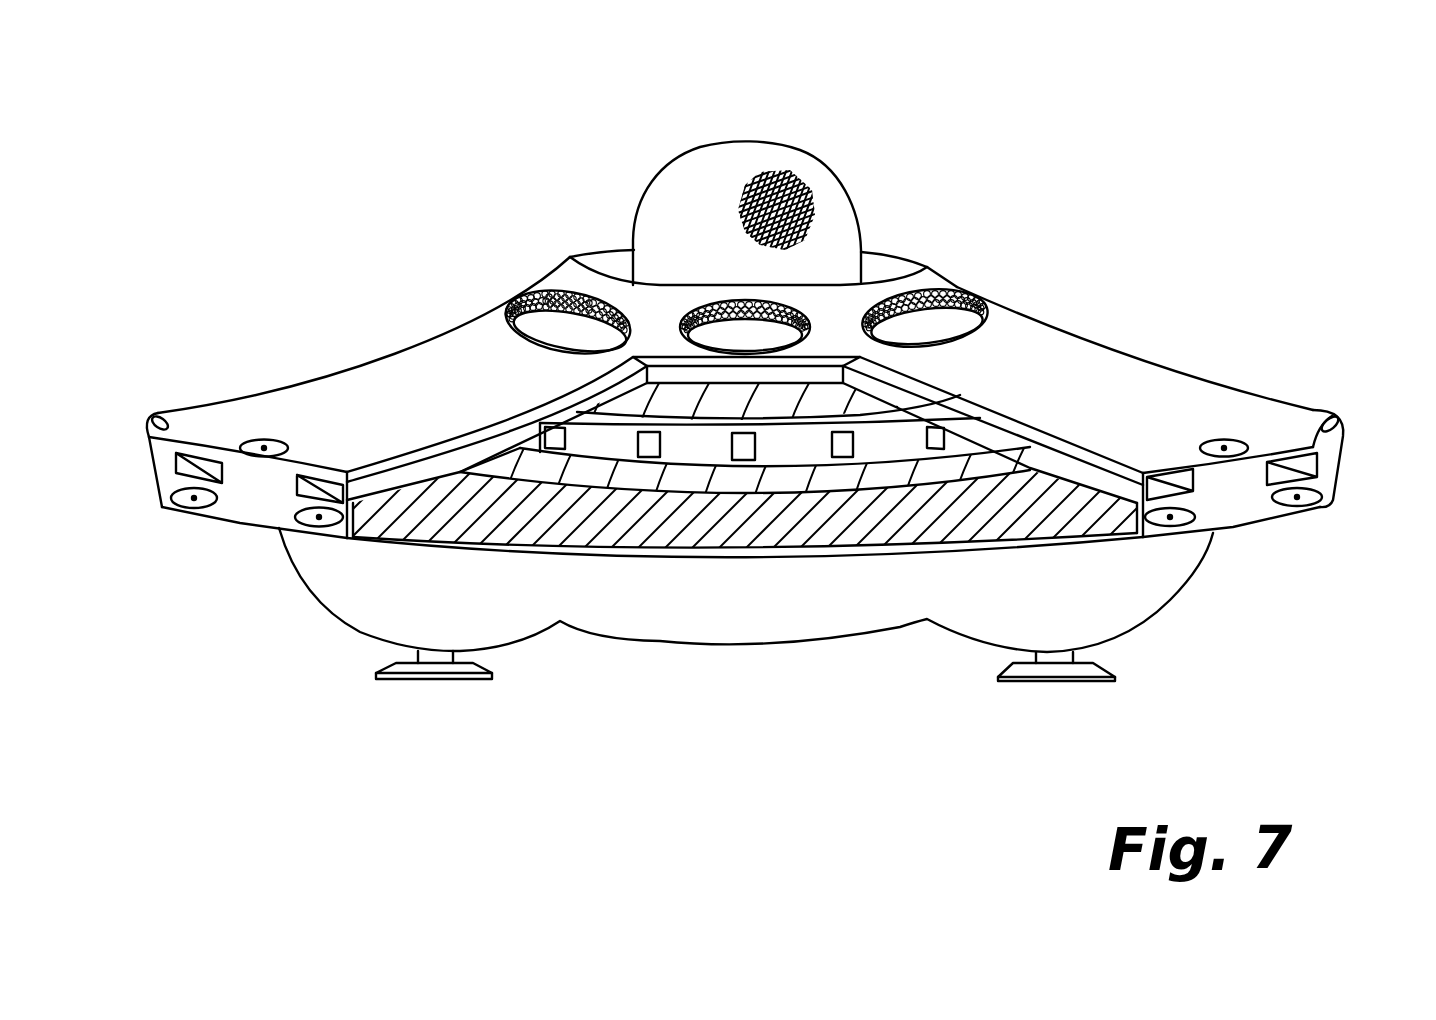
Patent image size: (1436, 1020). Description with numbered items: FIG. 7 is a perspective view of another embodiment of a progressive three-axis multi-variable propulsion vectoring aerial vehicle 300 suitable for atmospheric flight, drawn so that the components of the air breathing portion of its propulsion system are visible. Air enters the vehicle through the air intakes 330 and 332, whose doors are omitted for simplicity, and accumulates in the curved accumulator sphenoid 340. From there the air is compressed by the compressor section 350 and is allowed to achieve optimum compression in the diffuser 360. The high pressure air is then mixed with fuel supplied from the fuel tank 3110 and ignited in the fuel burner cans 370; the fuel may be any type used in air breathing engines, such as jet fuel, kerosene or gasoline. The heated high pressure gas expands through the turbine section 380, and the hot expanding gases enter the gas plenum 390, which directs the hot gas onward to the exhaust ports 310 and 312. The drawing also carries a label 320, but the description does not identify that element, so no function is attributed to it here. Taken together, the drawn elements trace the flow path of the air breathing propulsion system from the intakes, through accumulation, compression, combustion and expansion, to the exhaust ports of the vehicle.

The progressive 3-axis multi-variable propulsion vectoring aerial vehicle 300 is at (1000, 160).
The exhaust port 310 is at (1243, 445).
The exhaust port 312 is at (193, 499).
The dome 320 is at (803, 148).
The air intake 330 is at (912, 450).
The air intake 332 is at (1323, 432).
The curved accumulator sphenoid 340 is at (673, 373).
The compressor section 350 is at (663, 402).
The diffuser 360 is at (937, 445).
The fuel burner cans 370 is at (940, 447).
The turbine section 380 is at (522, 455).
The gas plenum 390 is at (1057, 520).
The fuel tank 3110 is at (333, 605).